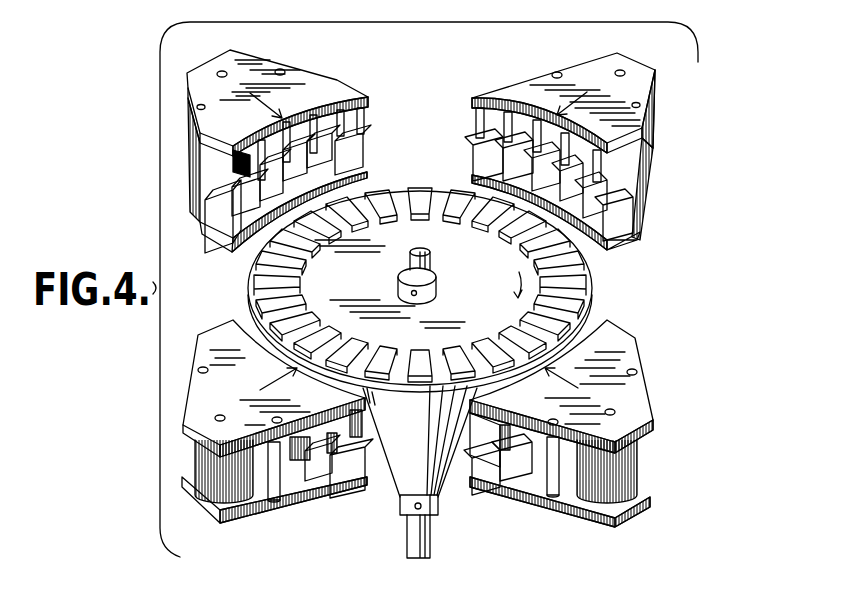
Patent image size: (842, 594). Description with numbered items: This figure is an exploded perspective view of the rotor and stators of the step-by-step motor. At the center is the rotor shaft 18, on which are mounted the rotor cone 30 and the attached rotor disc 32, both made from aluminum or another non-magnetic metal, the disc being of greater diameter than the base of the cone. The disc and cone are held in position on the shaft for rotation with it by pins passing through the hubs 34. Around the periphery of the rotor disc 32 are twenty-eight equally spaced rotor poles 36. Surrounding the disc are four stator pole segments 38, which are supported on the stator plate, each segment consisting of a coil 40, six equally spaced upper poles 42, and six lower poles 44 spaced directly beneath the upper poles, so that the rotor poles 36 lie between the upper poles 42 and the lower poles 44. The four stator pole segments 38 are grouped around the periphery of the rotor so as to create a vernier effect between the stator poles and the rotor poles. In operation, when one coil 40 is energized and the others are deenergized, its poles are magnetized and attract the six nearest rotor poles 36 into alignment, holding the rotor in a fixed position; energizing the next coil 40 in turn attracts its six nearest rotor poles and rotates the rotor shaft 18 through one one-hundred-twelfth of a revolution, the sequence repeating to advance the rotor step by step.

The rotor shaft 18 is at (412, 540).
The rotor cone 30 is at (412, 447).
The rotor disc 32 is at (486, 331).
The hubs 34 is at (440, 287).
The rotor poles 36 is at (258, 286).
The stator pole segments 38 is at (245, 73).
The coil 40 is at (197, 148).
The upper poles 42 is at (217, 163).
The lower poles 44 is at (215, 212).